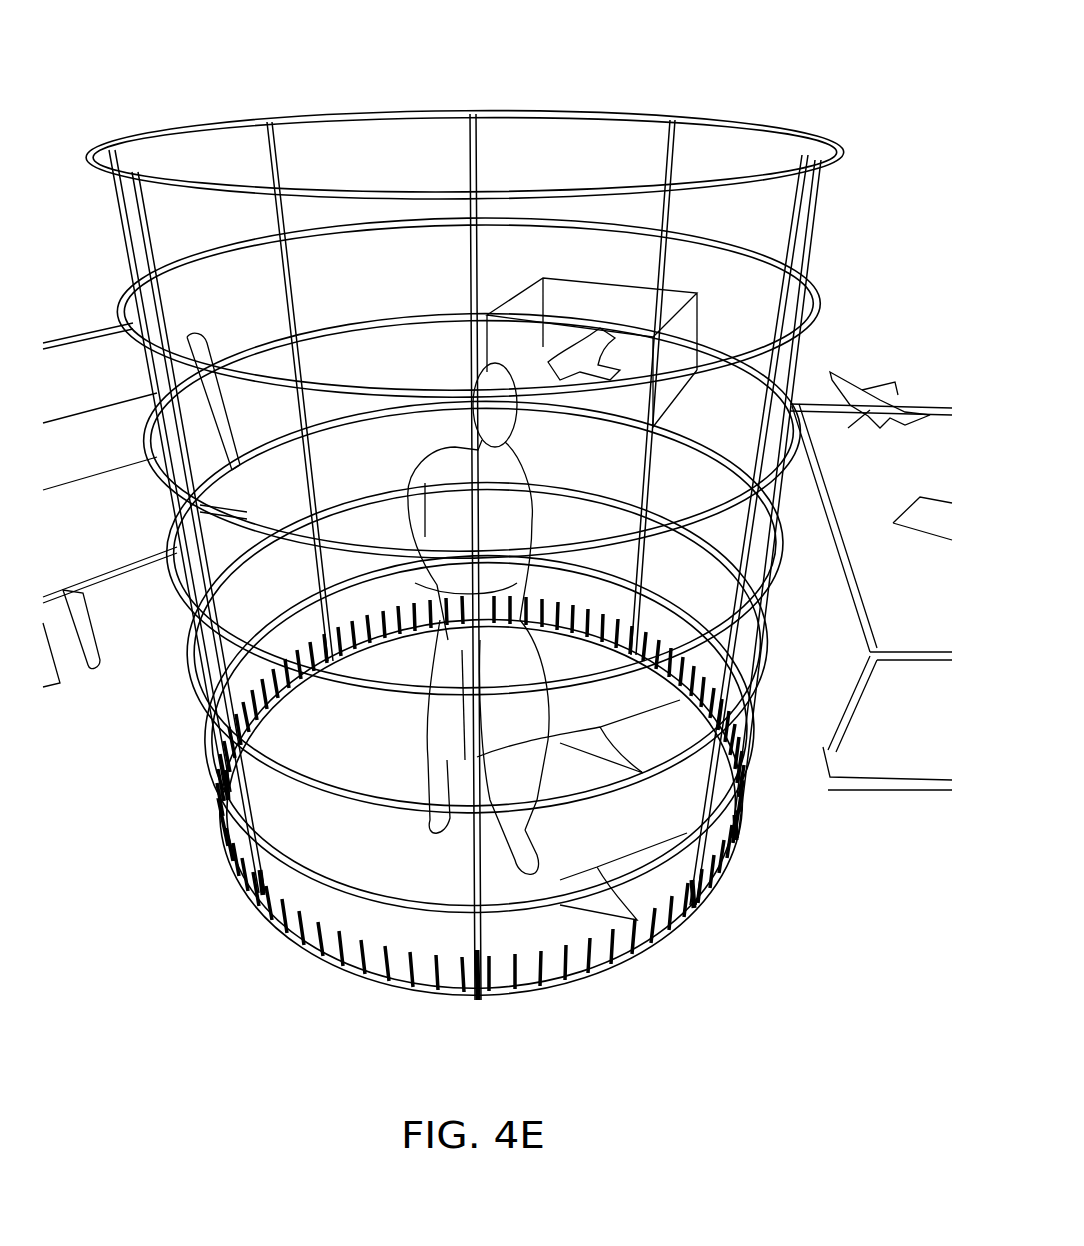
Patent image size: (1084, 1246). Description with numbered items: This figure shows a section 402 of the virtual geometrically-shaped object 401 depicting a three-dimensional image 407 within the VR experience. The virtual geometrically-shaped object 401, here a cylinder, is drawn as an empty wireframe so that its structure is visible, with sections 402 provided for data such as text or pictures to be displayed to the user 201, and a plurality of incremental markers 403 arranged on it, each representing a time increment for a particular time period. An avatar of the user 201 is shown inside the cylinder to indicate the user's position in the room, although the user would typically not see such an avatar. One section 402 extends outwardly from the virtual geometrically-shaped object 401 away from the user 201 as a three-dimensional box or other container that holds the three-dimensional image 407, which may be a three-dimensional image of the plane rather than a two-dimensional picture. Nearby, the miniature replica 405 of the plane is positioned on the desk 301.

The virtual geometrically-shaped object 401 is at (356, 104).
The section 402 is at (643, 773).
The incremental markers 403 is at (425, 970).
The miniature replica of the plane 405 is at (853, 373).
The three-dimensional image 407 is at (683, 293).
The user 201 is at (433, 463).
The desk 301 is at (907, 607).